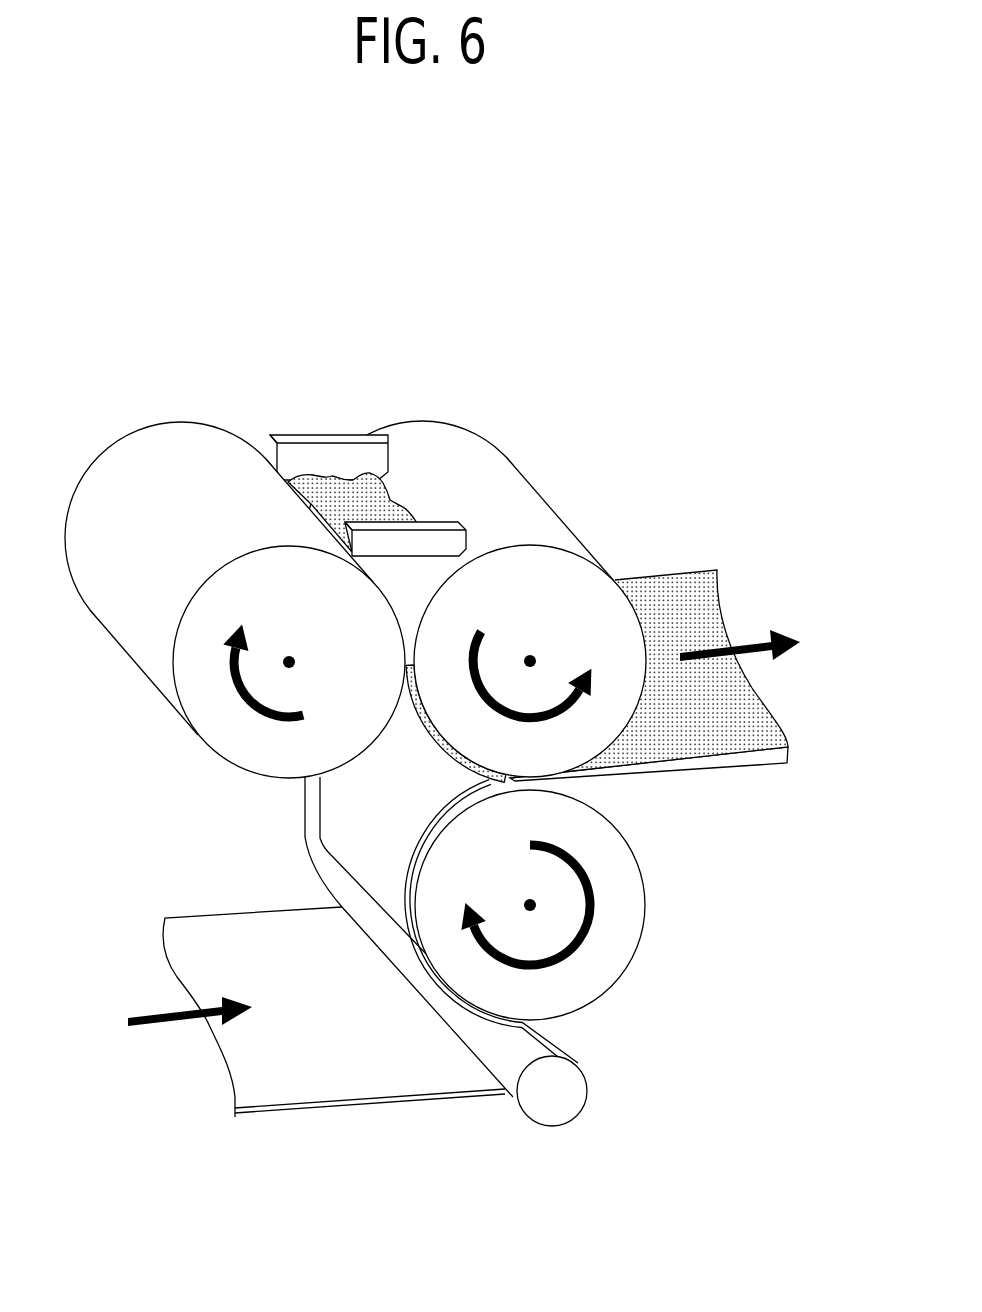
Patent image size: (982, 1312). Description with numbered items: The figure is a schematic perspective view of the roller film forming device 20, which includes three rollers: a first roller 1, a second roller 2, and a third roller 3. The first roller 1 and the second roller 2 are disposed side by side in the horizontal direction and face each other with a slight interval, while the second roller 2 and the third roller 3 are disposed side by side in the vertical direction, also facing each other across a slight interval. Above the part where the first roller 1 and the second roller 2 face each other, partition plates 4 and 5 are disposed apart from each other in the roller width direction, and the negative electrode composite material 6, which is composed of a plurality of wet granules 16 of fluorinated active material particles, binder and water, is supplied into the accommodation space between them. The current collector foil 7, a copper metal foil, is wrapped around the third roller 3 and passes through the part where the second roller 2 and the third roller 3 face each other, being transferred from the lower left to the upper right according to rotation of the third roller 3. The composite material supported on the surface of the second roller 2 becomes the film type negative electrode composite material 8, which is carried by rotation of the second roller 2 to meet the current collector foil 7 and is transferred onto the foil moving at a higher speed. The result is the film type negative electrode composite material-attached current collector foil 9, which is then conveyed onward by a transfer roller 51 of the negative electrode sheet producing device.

The roller film forming device 20 is at (236, 320).
The first roller 1 is at (296, 613).
The second roller 2 is at (460, 581).
The third roller 3 is at (543, 831).
The partition plate 4 is at (445, 521).
The partition plate 5 is at (330, 434).
The negative electrode composite material 6 is at (395, 447).
The wet granules 16 is at (368, 477).
The current collector foil 7 is at (225, 930).
The film type negative electrode composite material 8 is at (703, 569).
The film type negative electrode composite material-attached current collector foil 9 is at (642, 576).
The transfer roller 51 is at (548, 1107).